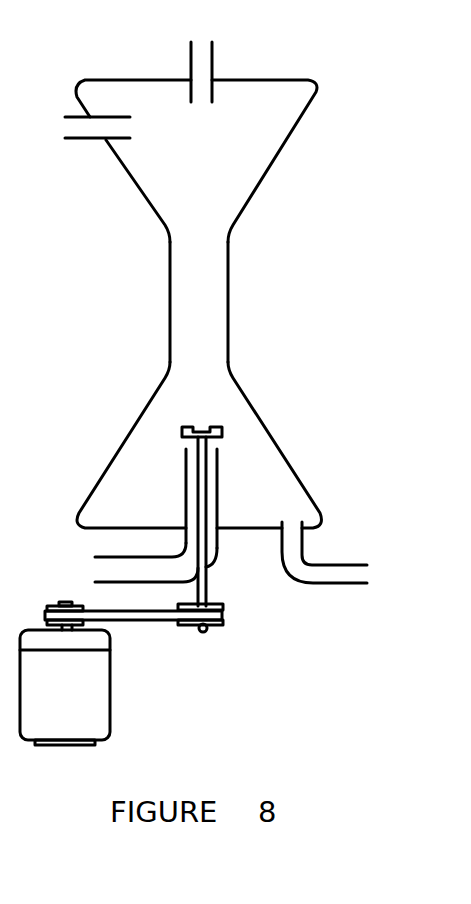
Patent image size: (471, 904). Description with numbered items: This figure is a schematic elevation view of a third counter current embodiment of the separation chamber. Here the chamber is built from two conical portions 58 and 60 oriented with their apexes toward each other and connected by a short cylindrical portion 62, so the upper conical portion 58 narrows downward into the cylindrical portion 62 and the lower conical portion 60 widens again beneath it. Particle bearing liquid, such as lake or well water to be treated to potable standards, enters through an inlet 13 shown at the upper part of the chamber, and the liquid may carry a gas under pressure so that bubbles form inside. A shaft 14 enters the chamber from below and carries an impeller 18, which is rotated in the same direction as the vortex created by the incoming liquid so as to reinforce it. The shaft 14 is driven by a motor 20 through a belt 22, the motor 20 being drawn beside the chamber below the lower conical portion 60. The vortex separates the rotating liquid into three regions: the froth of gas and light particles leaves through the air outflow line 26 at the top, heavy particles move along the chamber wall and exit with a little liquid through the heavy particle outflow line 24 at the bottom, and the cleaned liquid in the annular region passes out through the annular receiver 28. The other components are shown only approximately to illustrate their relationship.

The inlet 13 is at (82, 142).
The air outflow line 26 is at (214, 57).
The conical portion 58 is at (280, 158).
The short cylindrical portion 62 is at (228, 270).
The conical portion 60 is at (275, 442).
The impeller 18 is at (219, 426).
The shaft 14 is at (210, 593).
The annular receiver 28 is at (113, 556).
The heavy particle outflow line 24 is at (340, 563).
The belt 22 is at (147, 618).
The motor 20 is at (102, 688).